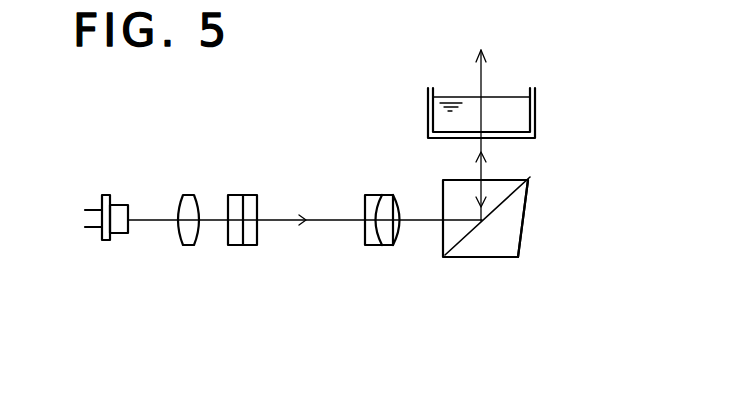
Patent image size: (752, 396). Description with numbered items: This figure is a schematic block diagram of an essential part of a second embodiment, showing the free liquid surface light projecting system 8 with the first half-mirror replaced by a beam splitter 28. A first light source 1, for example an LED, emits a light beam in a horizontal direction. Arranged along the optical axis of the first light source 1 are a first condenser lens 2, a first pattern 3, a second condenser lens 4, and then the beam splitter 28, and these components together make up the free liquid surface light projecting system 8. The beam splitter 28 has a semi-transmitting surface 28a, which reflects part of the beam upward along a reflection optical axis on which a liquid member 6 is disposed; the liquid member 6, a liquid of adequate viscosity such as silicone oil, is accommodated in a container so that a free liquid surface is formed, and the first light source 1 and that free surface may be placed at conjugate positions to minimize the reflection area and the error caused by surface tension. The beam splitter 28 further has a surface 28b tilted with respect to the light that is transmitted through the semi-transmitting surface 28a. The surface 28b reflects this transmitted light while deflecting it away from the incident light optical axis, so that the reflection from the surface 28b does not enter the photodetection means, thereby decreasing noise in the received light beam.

The first light source 1 is at (122, 202).
The first condenser lens 2 is at (188, 195).
The first pattern 3 is at (247, 195).
The second condenser lens 4 is at (380, 195).
The liquid member 6 is at (468, 108).
The free liquid surface light projecting system 8 is at (300, 292).
The beam splitter 28 is at (493, 219).
The semi-transmitting surface 28a is at (452, 248).
The surface 28b is at (523, 235).